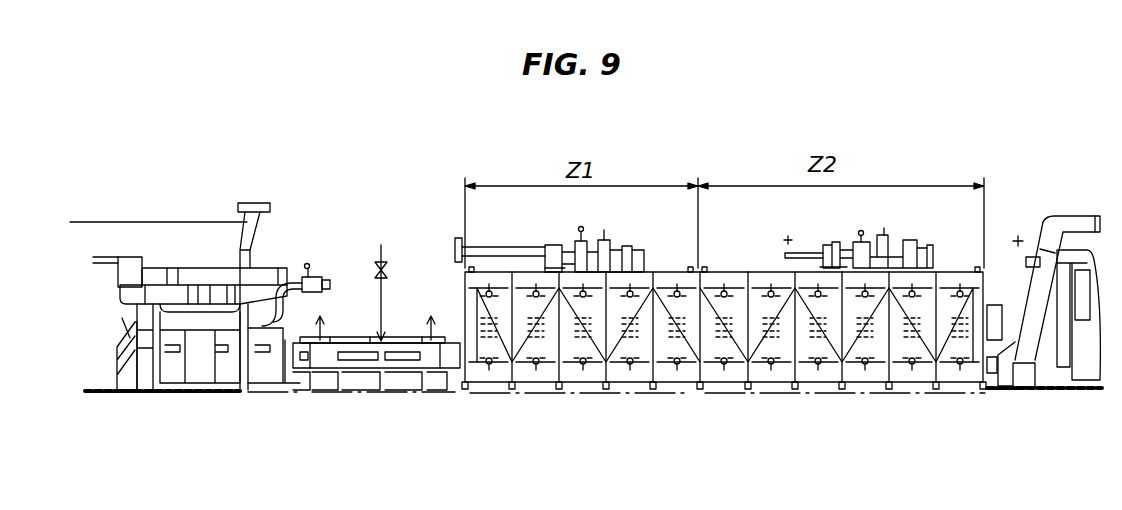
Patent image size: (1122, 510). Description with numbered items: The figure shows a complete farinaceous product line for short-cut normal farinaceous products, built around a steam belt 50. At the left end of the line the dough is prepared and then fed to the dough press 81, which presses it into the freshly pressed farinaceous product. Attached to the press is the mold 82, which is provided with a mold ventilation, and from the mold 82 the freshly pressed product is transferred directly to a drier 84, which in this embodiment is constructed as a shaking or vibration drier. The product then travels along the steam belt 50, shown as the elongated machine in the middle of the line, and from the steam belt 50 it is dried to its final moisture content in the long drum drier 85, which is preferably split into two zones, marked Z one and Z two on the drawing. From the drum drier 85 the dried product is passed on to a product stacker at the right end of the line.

The dough press 81 is at (218, 282).
The mold 82 is at (120, 297).
The drier 84 is at (205, 390).
The steam belt 50 is at (366, 388).
The drying oven 85 is at (686, 388).